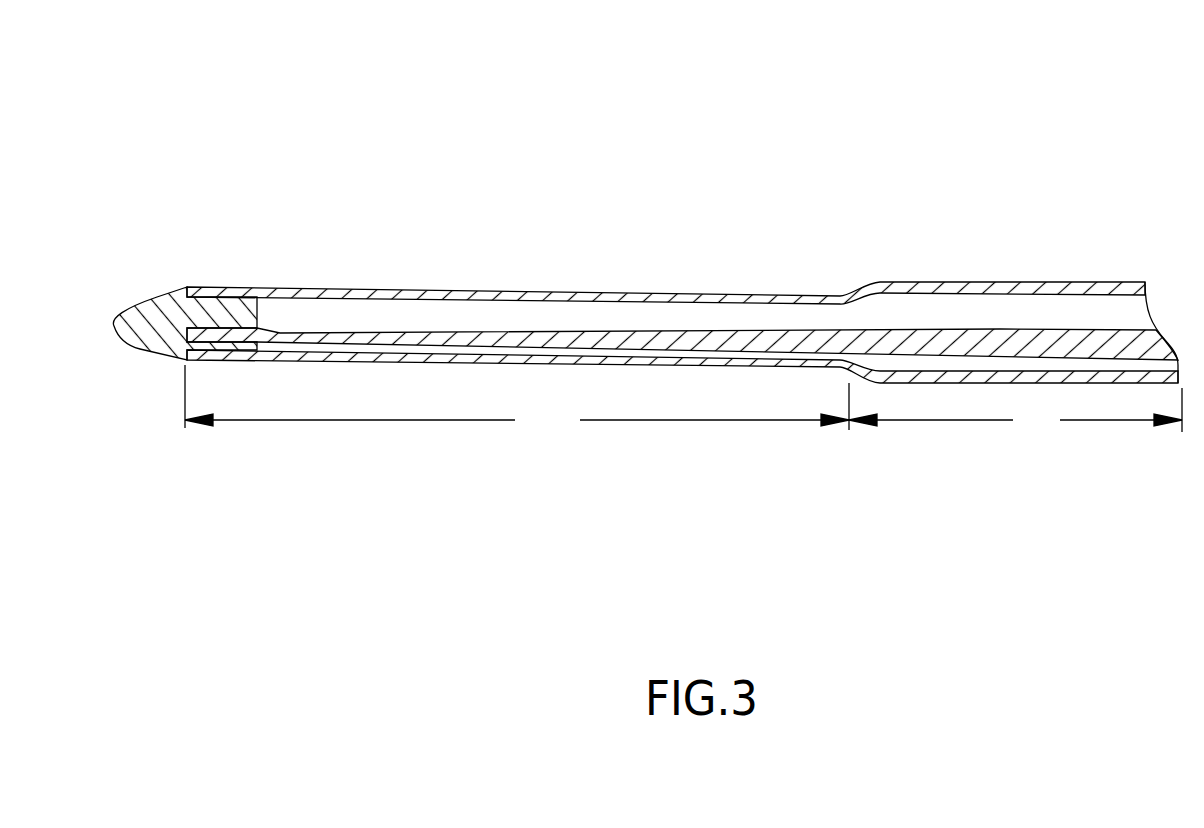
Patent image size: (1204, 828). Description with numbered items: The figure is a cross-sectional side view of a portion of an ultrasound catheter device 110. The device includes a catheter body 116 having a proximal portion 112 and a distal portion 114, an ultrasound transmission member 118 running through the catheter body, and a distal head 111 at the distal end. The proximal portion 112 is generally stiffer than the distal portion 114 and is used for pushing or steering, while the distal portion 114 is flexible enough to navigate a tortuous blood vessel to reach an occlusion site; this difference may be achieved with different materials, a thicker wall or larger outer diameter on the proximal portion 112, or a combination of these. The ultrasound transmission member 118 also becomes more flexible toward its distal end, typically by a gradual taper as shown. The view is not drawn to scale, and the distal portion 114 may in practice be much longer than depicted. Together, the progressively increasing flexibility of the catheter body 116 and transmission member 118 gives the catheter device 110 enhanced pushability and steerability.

The ultrasound catheter device 110 is at (685, 141).
The distal head 111 is at (163, 292).
The catheter body 116 is at (756, 295).
The ultrasound transmission member 118 is at (995, 328).
The distal portion 114 is at (517, 400).
The proximal portion 112 is at (1015, 412).